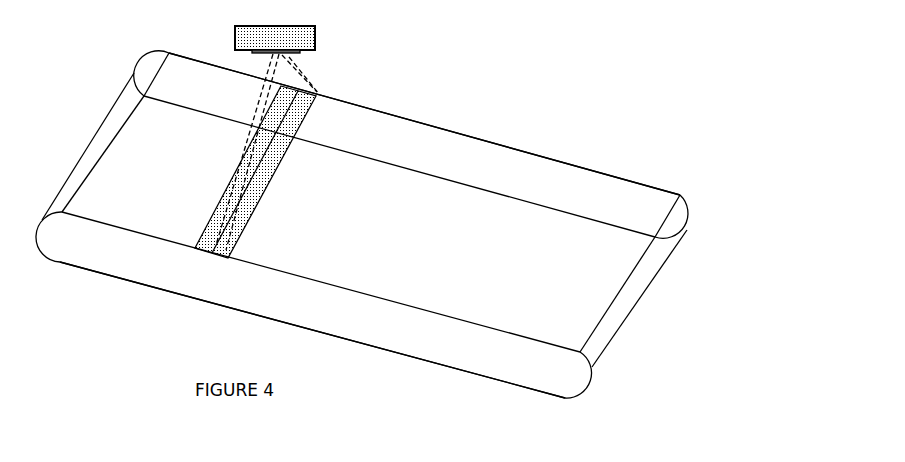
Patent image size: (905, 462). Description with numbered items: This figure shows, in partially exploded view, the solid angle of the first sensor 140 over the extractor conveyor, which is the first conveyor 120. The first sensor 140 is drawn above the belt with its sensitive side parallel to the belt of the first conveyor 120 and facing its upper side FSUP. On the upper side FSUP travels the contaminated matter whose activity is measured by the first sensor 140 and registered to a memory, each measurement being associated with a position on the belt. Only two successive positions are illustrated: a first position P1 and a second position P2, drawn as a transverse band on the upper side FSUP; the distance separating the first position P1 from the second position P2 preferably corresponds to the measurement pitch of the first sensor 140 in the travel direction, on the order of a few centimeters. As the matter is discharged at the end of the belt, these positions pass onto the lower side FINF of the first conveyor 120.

The first conveyor 120 is at (487, 358).
The first sensor 140 is at (326, 38).
The first position P1 is at (322, 88).
The second position P2 is at (201, 259).
The upper side FSUP is at (652, 160).
The lower side FINF is at (463, 390).